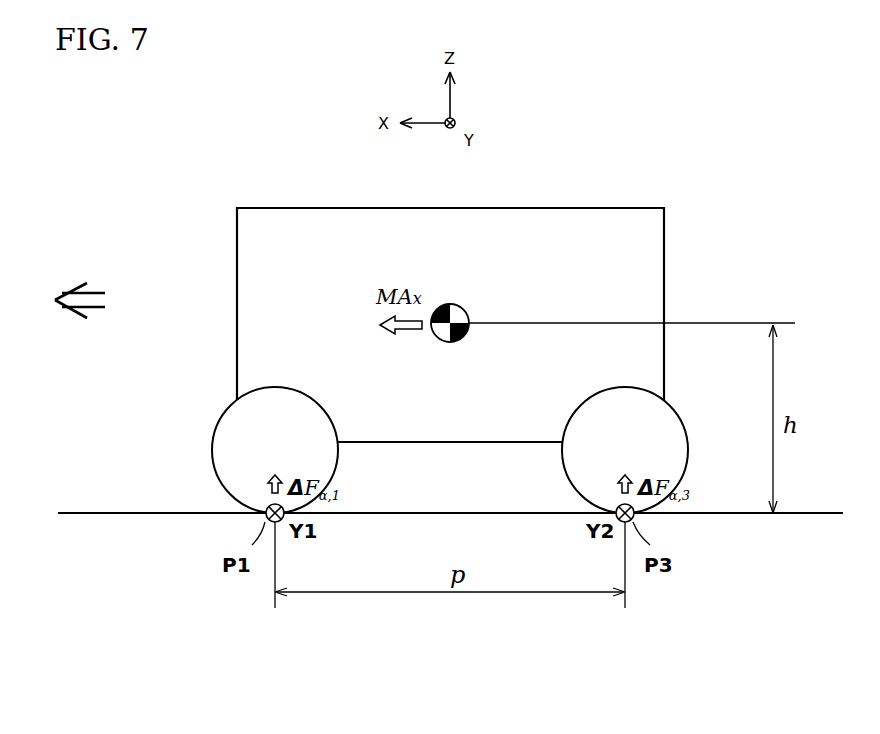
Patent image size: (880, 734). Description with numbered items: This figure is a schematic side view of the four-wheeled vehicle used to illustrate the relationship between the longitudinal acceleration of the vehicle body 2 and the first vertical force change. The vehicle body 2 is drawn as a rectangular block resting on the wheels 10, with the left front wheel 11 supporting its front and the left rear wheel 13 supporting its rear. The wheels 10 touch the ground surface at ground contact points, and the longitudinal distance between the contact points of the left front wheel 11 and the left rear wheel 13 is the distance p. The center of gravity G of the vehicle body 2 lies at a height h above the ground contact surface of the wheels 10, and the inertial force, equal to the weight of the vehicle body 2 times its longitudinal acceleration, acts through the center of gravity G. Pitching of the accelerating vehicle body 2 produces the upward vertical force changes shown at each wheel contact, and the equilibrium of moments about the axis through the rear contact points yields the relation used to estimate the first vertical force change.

The vehicle body 2 is at (665, 250).
The wheels 10 is at (452, 436).
The left front wheel 11 is at (228, 404).
The left rear wheel 13 is at (677, 404).
The center of gravity G is at (467, 304).